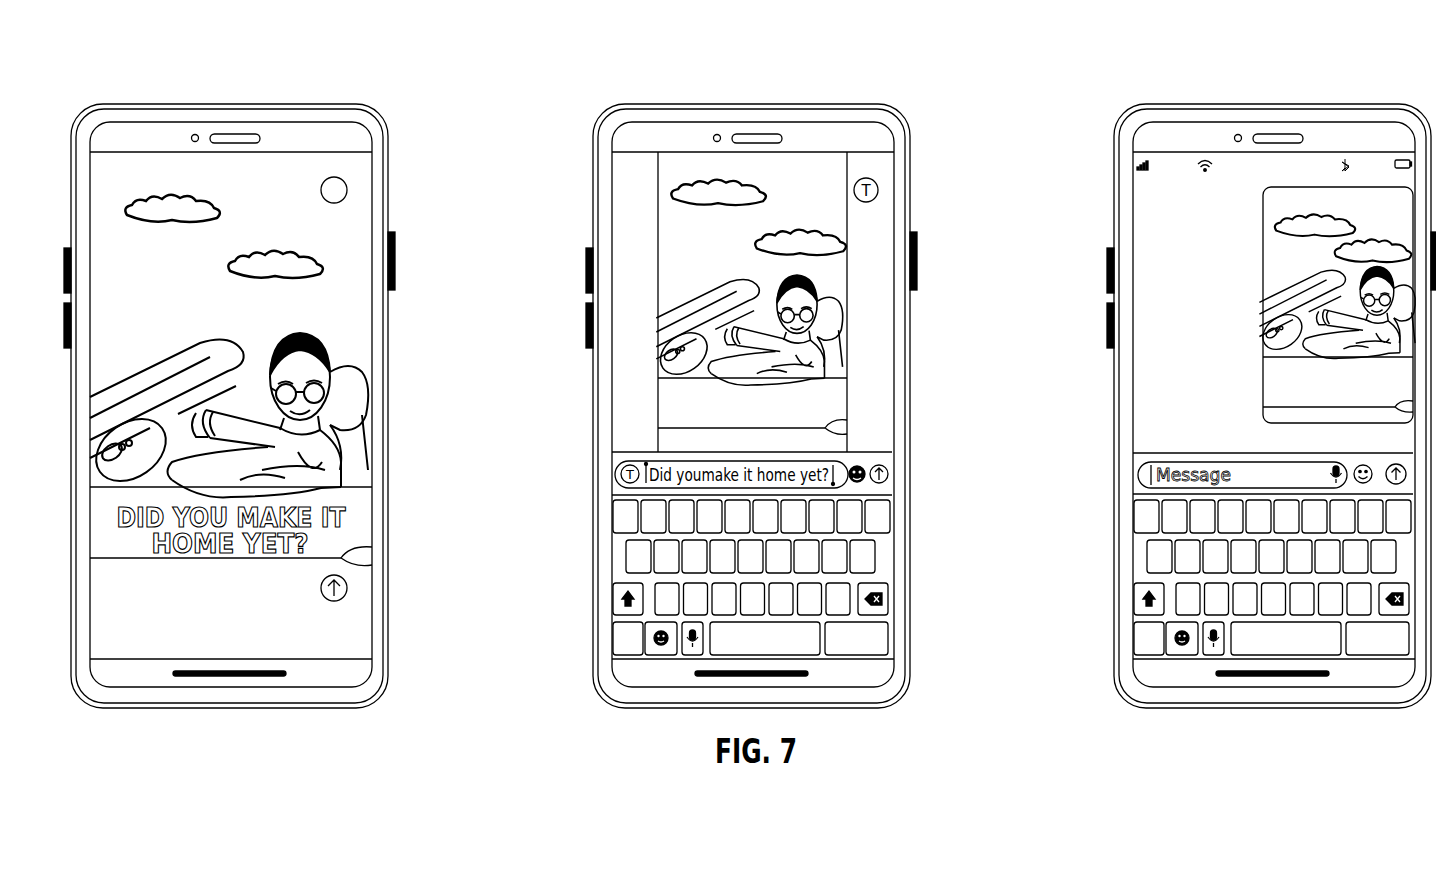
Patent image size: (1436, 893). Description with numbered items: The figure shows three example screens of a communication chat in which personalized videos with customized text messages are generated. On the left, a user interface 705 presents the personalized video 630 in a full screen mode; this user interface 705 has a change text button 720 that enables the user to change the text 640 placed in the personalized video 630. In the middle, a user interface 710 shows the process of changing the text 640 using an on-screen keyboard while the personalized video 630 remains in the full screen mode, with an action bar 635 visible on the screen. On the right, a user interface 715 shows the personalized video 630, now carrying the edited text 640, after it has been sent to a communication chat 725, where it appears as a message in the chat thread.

The user interface 705 is at (256, 192).
The change text button 720 is at (337, 177).
The personalized video 630 is at (117, 630).
The user interface 710 is at (690, 235).
The text 640 is at (665, 413).
The action bar 635 is at (680, 583).
The user interface 715 is at (1168, 151).
The communication chat 725 is at (1202, 247).